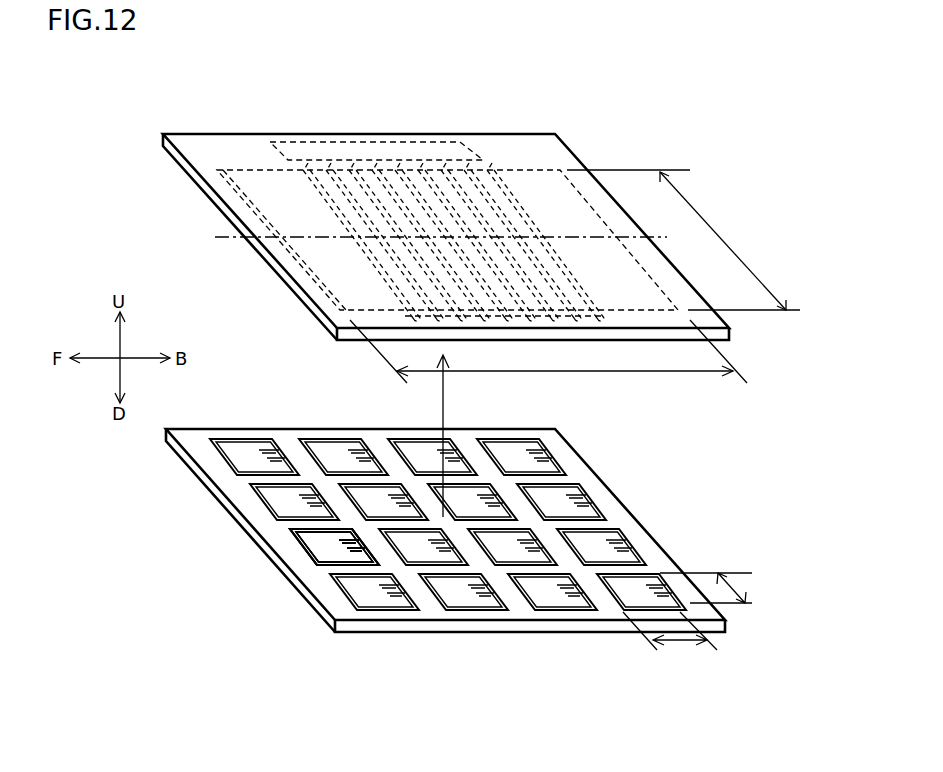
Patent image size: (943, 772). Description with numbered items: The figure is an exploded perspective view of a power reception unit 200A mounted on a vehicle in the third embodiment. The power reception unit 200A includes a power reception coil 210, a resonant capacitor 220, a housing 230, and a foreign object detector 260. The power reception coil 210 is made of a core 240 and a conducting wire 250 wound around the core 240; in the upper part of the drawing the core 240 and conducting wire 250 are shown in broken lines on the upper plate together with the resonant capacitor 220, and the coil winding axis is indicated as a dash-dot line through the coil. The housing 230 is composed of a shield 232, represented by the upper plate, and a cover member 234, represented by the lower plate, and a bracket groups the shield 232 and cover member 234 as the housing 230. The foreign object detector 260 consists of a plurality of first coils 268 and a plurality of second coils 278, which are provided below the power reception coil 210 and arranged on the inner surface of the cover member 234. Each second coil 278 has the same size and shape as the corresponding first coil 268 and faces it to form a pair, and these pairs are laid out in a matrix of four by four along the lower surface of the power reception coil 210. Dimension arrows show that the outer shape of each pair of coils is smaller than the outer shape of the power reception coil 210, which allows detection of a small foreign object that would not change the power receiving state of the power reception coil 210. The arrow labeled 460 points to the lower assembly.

The power reception unit 200A is at (132, 161).
The power reception coil 210 is at (382, 88).
The resonant capacitor 220 is at (420, 150).
The housing 230 is at (773, 390).
The shield 232 is at (617, 337).
The cover member 234 is at (593, 487).
The core 240 is at (313, 213).
The conducting wire 250 is at (373, 220).
The foreign object detector 260 is at (298, 547).
The first coils 268 is at (263, 561).
The second coils 278 is at (263, 561).
The coil array unit 460 is at (667, 521).